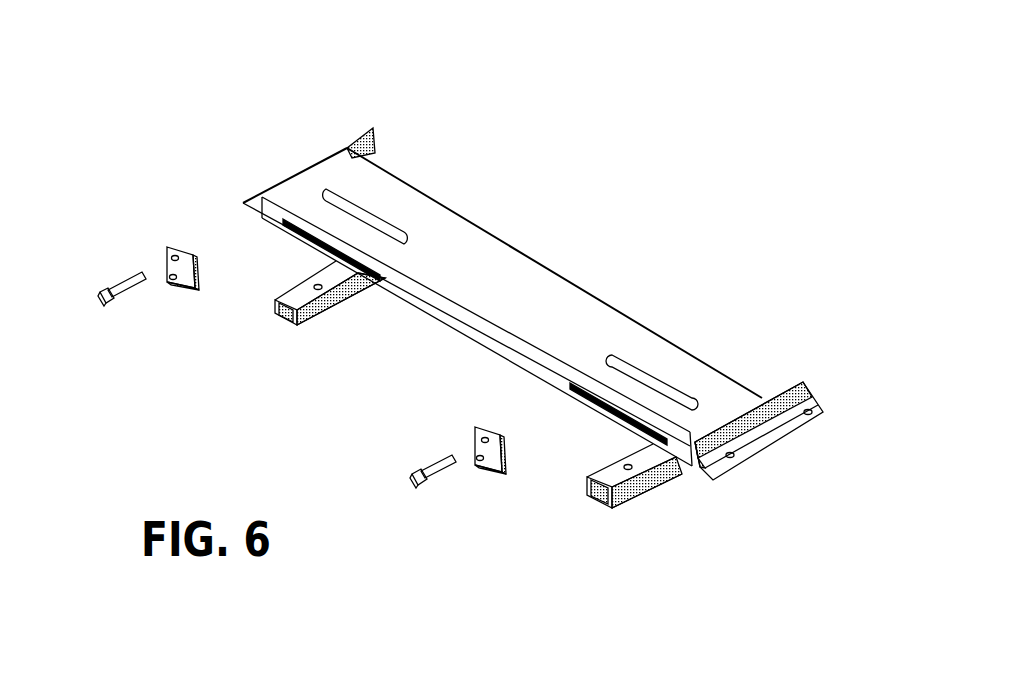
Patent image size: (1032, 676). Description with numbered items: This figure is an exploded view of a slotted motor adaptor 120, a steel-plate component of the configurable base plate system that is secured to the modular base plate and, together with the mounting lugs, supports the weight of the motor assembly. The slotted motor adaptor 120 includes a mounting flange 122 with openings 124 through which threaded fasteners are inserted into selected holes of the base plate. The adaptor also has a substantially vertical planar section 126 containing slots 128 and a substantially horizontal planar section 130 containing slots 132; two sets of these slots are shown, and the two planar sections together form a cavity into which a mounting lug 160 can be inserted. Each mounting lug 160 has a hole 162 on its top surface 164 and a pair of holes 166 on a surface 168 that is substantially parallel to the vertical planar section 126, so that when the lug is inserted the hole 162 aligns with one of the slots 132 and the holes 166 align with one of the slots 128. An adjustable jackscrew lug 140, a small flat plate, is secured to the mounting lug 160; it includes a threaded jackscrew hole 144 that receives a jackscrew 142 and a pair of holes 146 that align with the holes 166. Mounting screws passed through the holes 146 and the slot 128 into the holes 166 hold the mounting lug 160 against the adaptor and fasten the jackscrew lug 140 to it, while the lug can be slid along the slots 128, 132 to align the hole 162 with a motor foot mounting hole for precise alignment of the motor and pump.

The slotted motor adaptor 120 is at (300, 76).
The mounting flange 122 is at (770, 435).
The openings 124 is at (826, 408).
The substantially vertical planar section 126 is at (432, 308).
The slots 128 is at (286, 228).
The substantially horizontal planar section 130 is at (727, 376).
The slots 132 is at (418, 236).
The adjustable jackscrew lug 140 is at (166, 246).
The jackscrew 142 is at (100, 290).
The jackscrew hole 144 is at (186, 250).
The holes 146 is at (178, 293).
The mounting lug 160 is at (300, 327).
The hole 162 is at (665, 470).
The top surface 164 is at (645, 470).
The holes 166 is at (607, 507).
The surface 168 is at (583, 488).